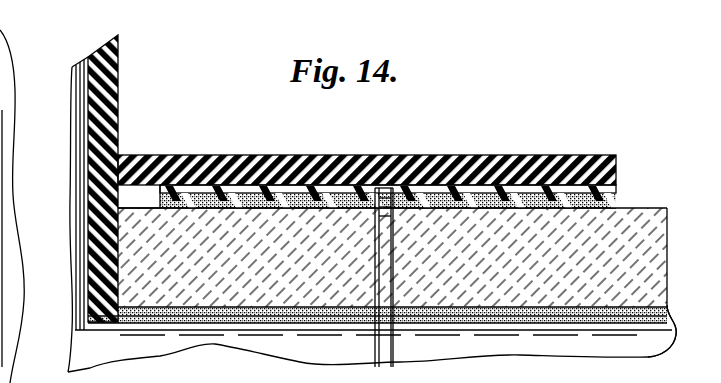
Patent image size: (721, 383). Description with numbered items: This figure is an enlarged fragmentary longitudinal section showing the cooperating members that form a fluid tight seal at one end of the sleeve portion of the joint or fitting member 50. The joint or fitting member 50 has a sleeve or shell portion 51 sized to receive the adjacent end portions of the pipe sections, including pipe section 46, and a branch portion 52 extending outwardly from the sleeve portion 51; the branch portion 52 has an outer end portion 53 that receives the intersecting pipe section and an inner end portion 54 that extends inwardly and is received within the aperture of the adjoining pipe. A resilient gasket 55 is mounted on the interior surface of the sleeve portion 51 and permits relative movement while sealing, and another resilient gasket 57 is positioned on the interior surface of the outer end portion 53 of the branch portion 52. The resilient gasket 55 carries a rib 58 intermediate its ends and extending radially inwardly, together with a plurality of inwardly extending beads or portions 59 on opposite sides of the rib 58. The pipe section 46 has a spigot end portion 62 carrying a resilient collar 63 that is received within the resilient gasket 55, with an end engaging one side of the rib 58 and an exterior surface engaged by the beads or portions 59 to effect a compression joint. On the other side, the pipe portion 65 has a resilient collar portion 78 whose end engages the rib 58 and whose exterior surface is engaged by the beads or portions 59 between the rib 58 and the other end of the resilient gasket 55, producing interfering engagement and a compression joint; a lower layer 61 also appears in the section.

The pipe section 46 is at (663, 207).
The joint or fitting member 50 is at (133, 93).
The sleeve or shell portion 51 is at (446, 158).
The branch portion 52 is at (118, 44).
The outer end portion 53 is at (10, 78).
The inner end portion 54 is at (64, 280).
The resilient gasket 55 is at (412, 205).
The resilient gasket 57 is at (385, 359).
The rib 58 is at (384, 212).
The inwardly extending beads or portions 59 is at (187, 190).
The lower layer 61 is at (373, 345).
The spigot end portion 62 is at (645, 344).
The resilient collar 63 is at (617, 200).
The pipe portion 65 is at (153, 347).
The resilient collar portion 78 is at (148, 192).